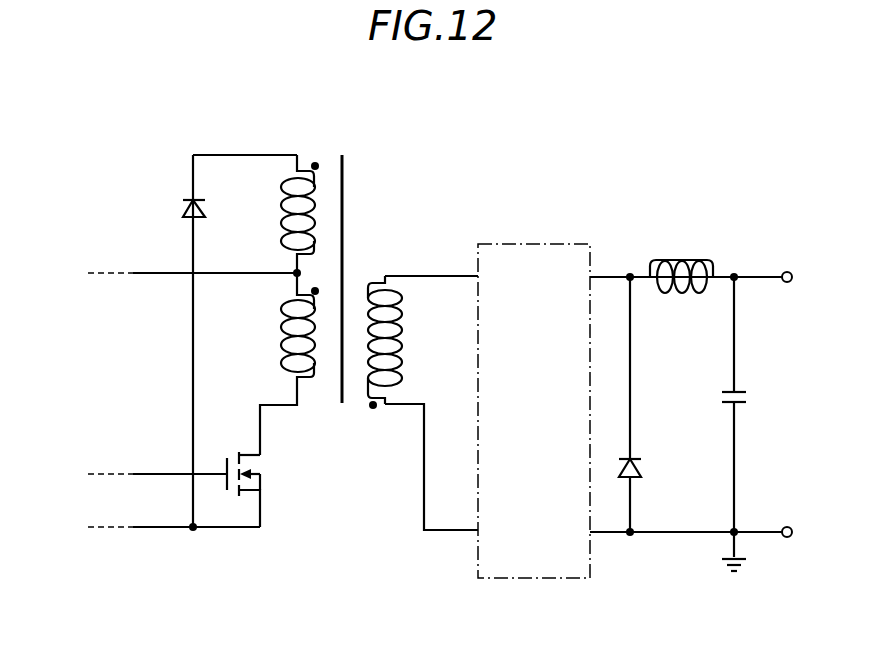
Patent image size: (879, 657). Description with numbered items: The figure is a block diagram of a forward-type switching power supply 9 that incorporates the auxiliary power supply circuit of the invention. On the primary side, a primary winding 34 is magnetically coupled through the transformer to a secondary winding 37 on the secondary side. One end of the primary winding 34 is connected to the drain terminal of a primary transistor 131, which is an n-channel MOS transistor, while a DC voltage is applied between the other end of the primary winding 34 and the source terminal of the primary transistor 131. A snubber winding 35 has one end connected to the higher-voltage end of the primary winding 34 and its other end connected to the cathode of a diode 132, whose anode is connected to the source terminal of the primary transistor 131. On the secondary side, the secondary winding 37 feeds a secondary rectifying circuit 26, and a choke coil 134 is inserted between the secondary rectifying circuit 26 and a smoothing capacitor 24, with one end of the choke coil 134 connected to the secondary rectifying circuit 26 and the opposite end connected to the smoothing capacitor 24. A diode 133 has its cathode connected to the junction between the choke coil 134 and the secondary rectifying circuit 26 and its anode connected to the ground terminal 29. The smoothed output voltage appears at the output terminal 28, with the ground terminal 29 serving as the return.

The forward-type switching power supply 9 is at (104, 113).
The snubber winding 35 is at (290, 178).
The primary winding 34 is at (310, 378).
The primary transistor 131 is at (258, 468).
The diode 132 is at (182, 210).
The secondary winding 37 is at (371, 287).
The secondary rectifying circuit 26 is at (522, 243).
The choke coil 134 is at (683, 262).
The output terminal 28 is at (788, 271).
The smoothing capacitor 24 is at (748, 397).
The diode 133 is at (643, 466).
The ground terminal 29 is at (787, 538).